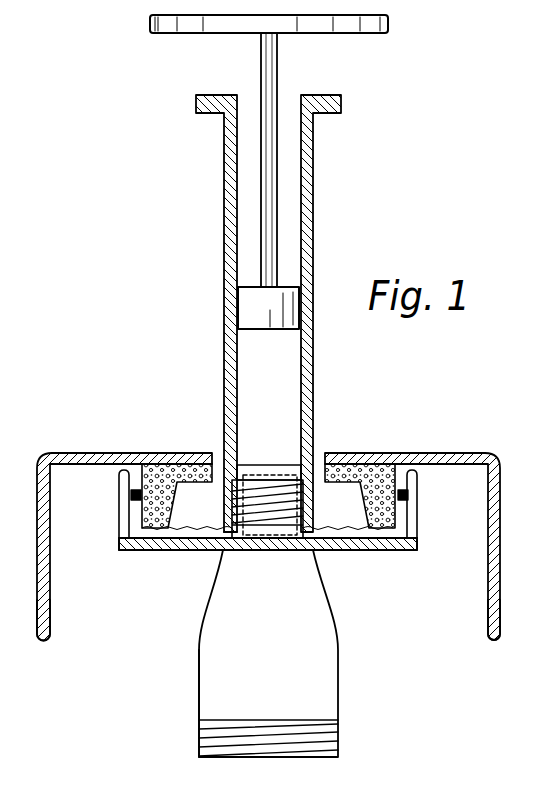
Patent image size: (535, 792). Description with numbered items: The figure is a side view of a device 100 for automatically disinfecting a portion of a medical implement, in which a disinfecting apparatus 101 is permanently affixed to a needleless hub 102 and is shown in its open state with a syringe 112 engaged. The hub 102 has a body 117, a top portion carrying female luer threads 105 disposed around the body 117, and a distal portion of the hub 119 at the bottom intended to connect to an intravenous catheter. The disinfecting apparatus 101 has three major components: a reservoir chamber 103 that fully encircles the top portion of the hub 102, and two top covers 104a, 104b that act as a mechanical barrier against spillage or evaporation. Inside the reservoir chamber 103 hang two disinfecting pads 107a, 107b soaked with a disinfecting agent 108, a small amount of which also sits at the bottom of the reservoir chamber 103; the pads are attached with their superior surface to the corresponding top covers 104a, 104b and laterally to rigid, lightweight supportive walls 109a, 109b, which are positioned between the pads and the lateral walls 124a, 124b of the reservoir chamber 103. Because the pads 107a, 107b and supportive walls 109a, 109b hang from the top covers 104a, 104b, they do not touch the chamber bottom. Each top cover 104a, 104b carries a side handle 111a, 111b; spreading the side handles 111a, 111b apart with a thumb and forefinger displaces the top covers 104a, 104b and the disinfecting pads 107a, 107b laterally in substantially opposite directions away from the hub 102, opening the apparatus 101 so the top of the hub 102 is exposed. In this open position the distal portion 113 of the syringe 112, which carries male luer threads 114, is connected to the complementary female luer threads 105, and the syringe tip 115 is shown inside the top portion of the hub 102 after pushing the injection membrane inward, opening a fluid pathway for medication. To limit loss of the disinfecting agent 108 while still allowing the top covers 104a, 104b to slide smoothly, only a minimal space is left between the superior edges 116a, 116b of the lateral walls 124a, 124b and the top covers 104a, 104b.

The device 100 is at (117, 70).
The disinfecting apparatus 101 is at (135, 452).
The needleless hub 102 is at (338, 668).
The reservoir chamber 103 is at (352, 552).
The top cover 104a is at (108, 452).
The top cover 104b is at (430, 452).
The female luer threads 105 is at (275, 510).
The disinfecting pad 107a is at (190, 464).
The disinfecting pad 107b is at (385, 464).
The disinfecting agent 108 is at (195, 551).
The supportive wall 109a is at (125, 552).
The supportive wall 109b is at (408, 552).
The side handle 111a is at (50, 610).
The side handle 111b is at (488, 588).
The syringe 112 is at (224, 230).
The distal portion of the syringe 113 is at (226, 468).
The male luer threads 114 is at (260, 495).
The syringe tip 115 is at (268, 536).
The superior edge 116a is at (128, 470).
The superior edge 116b is at (408, 470).
The body 117 is at (199, 667).
The distal portion of the hub 119 is at (300, 757).
The lateral wall 124a is at (128, 520).
The lateral wall 124b is at (408, 520).